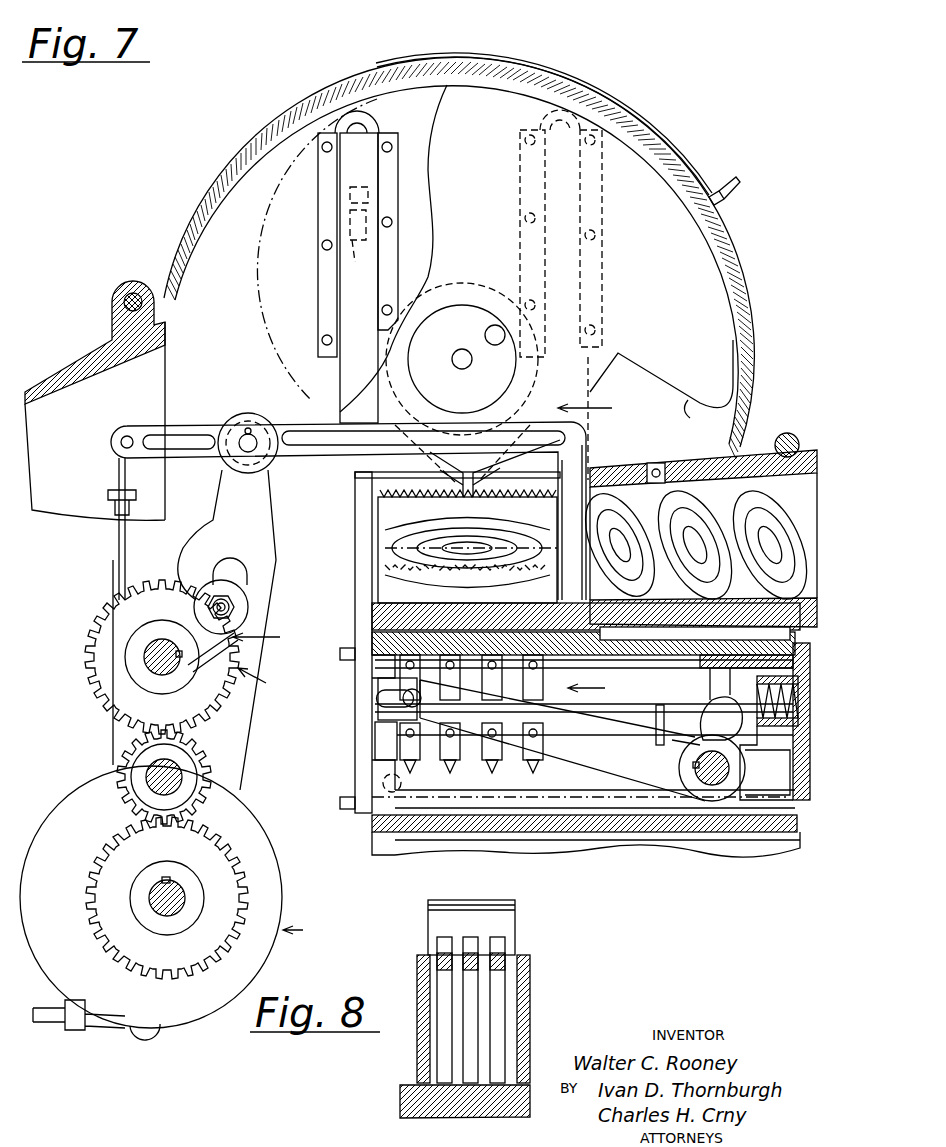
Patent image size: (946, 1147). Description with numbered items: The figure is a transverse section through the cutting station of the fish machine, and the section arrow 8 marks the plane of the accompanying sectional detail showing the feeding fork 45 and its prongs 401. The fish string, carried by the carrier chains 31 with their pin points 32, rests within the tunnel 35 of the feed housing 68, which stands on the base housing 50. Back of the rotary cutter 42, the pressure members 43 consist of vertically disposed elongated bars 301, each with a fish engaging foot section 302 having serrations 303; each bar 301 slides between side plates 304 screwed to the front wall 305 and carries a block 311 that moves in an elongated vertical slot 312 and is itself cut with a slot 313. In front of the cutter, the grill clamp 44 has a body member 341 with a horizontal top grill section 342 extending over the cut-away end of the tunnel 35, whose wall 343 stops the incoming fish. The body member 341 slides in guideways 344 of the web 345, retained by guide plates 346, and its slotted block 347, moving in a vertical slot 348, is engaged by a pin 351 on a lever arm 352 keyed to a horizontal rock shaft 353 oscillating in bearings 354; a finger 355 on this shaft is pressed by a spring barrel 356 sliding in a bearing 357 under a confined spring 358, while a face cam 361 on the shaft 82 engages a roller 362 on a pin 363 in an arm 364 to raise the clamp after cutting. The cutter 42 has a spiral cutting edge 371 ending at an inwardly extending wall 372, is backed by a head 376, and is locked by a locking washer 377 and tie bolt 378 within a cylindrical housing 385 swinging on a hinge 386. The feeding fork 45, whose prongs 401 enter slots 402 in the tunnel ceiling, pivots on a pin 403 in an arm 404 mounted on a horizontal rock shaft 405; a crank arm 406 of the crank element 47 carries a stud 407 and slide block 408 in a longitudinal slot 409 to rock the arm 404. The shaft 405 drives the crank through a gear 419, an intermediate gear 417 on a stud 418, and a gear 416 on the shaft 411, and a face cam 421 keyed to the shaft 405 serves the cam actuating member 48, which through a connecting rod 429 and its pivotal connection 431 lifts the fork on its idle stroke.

In FIG. 7, the front wall 305 is at (220, 218).
In FIG. 7, the cylindrical housing 385 is at (672, 157).
In FIG. 7, the pressure members 43 is at (345, 170).
In FIG. 7, the hinge 386 is at (132, 290).
In FIG. 7, the feed housing 68 is at (92, 360).
In FIG. 7, the side plates 304 is at (389, 167).
In FIG. 7, the vertically disposed elongated bars 301 is at (359, 278).
In FIG. 7, the elongated vertical slot 312 is at (366, 120).
In FIG. 7, the block 311 is at (372, 213).
In FIG. 7, the slot 313 is at (356, 260).
In FIG. 7, the cutting edge 371 is at (476, 80).
In FIG. 7, the head 376 is at (410, 308).
In FIG. 7, the locking washer 377 is at (470, 322).
In FIG. 7, the tie bolt 378 is at (463, 356).
In FIG. 7, the rotary cutter 42 is at (661, 374).
In FIG. 7, the inwardly extending wall 372 is at (699, 417).
In FIG. 7, the section arrow 8 is at (598, 549).
In FIG. 7, the feeding fork 45 is at (332, 455).
In FIG. 8, the feeding fork 45 is at (507, 912).
In FIG. 7, the prongs 401 is at (578, 470).
In FIG. 8, the prongs 401 is at (505, 940).
In FIG. 7, the pivotal connection 431 is at (118, 443).
In FIG. 7, the pin 403 is at (247, 440).
In FIG. 7, the connecting rod 429 is at (120, 548).
In FIG. 7, the arm 404 is at (258, 521).
In FIG. 7, the slide block 408 is at (230, 566).
In FIG. 7, the stud 407 is at (234, 605).
In FIG. 7, the crank arm 406 is at (215, 652).
In FIG. 7, the crank element 47 is at (267, 636).
In FIG. 7, the longitudinal slot 409 is at (267, 680).
In FIG. 7, the gear 416 is at (97, 627).
In FIG. 7, the shaft 411 is at (150, 665).
In FIG. 7, the stud 418 is at (180, 788).
In FIG. 7, the intermediate gear 417 is at (138, 792).
In FIG. 7, the gear 419 is at (167, 898).
In FIG. 7, the horizontal rock shaft 405 is at (165, 912).
In FIG. 7, the face cam 421 is at (151, 903).
In FIG. 7, the cam actuating member 48 is at (303, 930).
In FIG. 7, the grill clamp 44 is at (352, 576).
In FIG. 7, the base housing 50 is at (302, 855).
In FIG. 7, the tunnel 35 is at (445, 542).
In FIG. 8, the tunnel 35 is at (410, 1105).
In FIG. 7, the top grill section 342 is at (462, 497).
In FIG. 7, the fish engaging foot section 302 is at (478, 548).
In FIG. 7, the serrations 303 is at (518, 503).
In FIG. 7, the slots 402 is at (635, 472).
In FIG. 8, the slots 402 is at (490, 976).
In FIG. 7, the carrier chains 31 is at (497, 757).
In FIG. 7, the pin points 32 is at (488, 770).
In FIG. 7, the body member 341 is at (385, 688).
In FIG. 7, the pin 351 is at (415, 698).
In FIG. 7, the guide plates 346 is at (352, 678).
In FIG. 7, the slotted block 347 is at (383, 722).
In FIG. 7, the vertical slot 348 is at (376, 742).
In FIG. 7, the guideways 344 is at (363, 766).
In FIG. 7, the web 345 is at (386, 786).
In FIG. 7, the lever arm 352 is at (562, 740).
In FIG. 7, the horizontal rock shaft 353 is at (728, 782).
In FIG. 7, the bearings 354 is at (737, 798).
In FIG. 7, the shaft 82 is at (660, 712).
In FIG. 7, the arm 364 is at (690, 750).
In FIG. 7, the finger 355 is at (725, 718).
In FIG. 7, the face cam 361 is at (682, 668).
In FIG. 7, the roller 362 is at (712, 702).
In FIG. 7, the pin 363 is at (725, 700).
In FIG. 7, the spring barrel 356 is at (760, 732).
In FIG. 7, the bearing 357 is at (790, 765).
In FIG. 7, the confined spring 358 is at (767, 772).
In FIG. 8, the wall 343 is at (420, 1027).